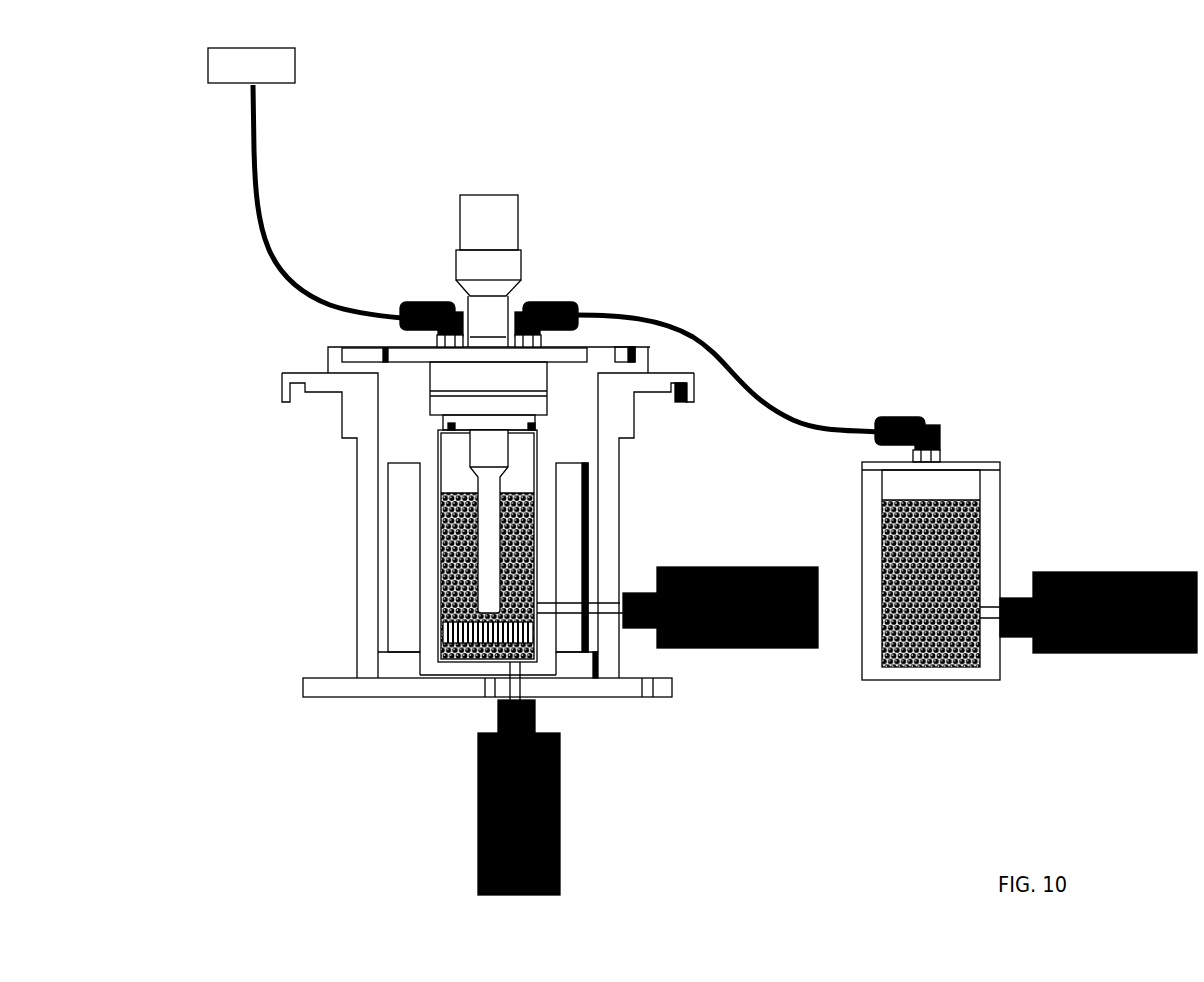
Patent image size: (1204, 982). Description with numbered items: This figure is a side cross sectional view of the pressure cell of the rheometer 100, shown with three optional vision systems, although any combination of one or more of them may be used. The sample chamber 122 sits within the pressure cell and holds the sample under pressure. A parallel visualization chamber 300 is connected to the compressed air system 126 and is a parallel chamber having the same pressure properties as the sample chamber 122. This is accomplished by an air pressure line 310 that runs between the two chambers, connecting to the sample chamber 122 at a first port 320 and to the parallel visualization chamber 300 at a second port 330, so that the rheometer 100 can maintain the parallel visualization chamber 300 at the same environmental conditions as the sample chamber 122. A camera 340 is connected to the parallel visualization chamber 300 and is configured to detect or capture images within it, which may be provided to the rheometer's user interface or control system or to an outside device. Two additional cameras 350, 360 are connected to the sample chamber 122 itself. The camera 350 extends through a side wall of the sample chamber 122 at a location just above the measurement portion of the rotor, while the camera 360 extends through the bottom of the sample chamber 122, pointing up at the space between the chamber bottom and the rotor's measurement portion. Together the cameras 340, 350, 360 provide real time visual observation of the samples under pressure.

The rheometer 100 is at (468, 360).
The sample chamber 122 is at (448, 465).
The compressed air system 126 is at (305, 183).
The parallel visualization chamber 300 is at (1043, 487).
The air pressure line 310 is at (727, 357).
The first port 320 is at (547, 300).
The second port 330 is at (900, 418).
The camera 340 is at (1120, 570).
The camera 350 is at (735, 568).
The camera 360 is at (478, 772).